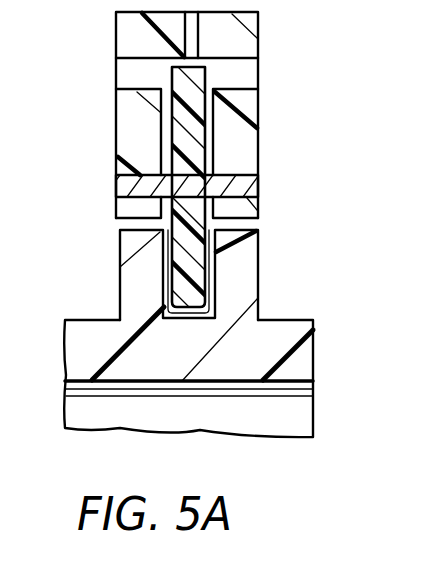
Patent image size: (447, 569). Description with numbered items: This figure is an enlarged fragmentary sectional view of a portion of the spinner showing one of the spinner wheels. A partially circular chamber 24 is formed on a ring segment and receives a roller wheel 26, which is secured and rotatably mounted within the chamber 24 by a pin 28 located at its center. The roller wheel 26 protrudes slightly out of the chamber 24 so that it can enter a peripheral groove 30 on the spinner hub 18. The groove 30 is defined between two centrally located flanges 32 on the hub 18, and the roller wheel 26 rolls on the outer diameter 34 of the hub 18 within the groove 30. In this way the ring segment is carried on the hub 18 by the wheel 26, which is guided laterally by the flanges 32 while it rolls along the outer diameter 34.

The spinner hub 18 is at (270, 242).
The partially circular chamber 24 is at (174, 131).
The roller wheel 26 is at (195, 84).
The pin 28 is at (251, 190).
The peripheral groove 30 is at (177, 257).
The flanges 32 is at (137, 303).
The outer diameter 34 is at (191, 309).